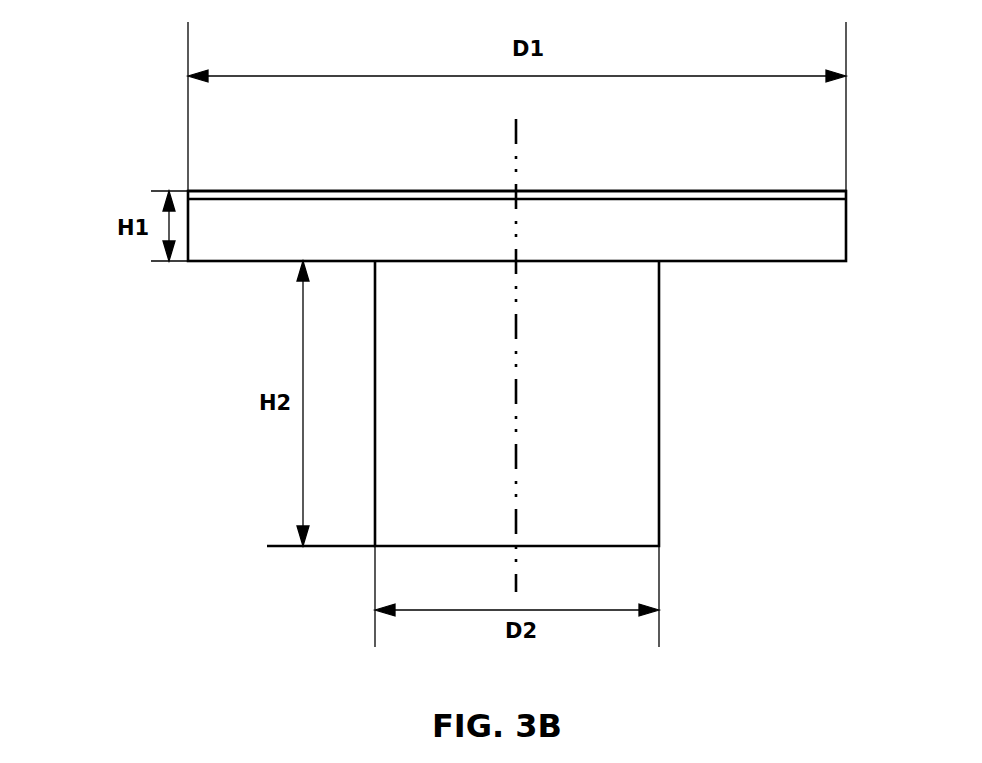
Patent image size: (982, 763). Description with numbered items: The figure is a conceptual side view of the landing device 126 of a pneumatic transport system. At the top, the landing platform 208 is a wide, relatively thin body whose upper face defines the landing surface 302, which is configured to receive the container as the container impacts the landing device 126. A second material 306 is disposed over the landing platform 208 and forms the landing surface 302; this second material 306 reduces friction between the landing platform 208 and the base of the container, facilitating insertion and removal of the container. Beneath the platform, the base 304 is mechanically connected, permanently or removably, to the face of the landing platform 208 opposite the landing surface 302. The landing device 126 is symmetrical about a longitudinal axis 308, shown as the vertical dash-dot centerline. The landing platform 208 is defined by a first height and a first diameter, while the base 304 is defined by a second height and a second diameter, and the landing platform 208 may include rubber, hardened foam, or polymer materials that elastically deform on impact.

The landing device 126 is at (164, 122).
The landing platform 208 is at (846, 235).
The landing surface 302 is at (664, 181).
The base 304 is at (659, 425).
The second material 306 is at (846, 193).
The longitudinal axis 308 is at (516, 164).